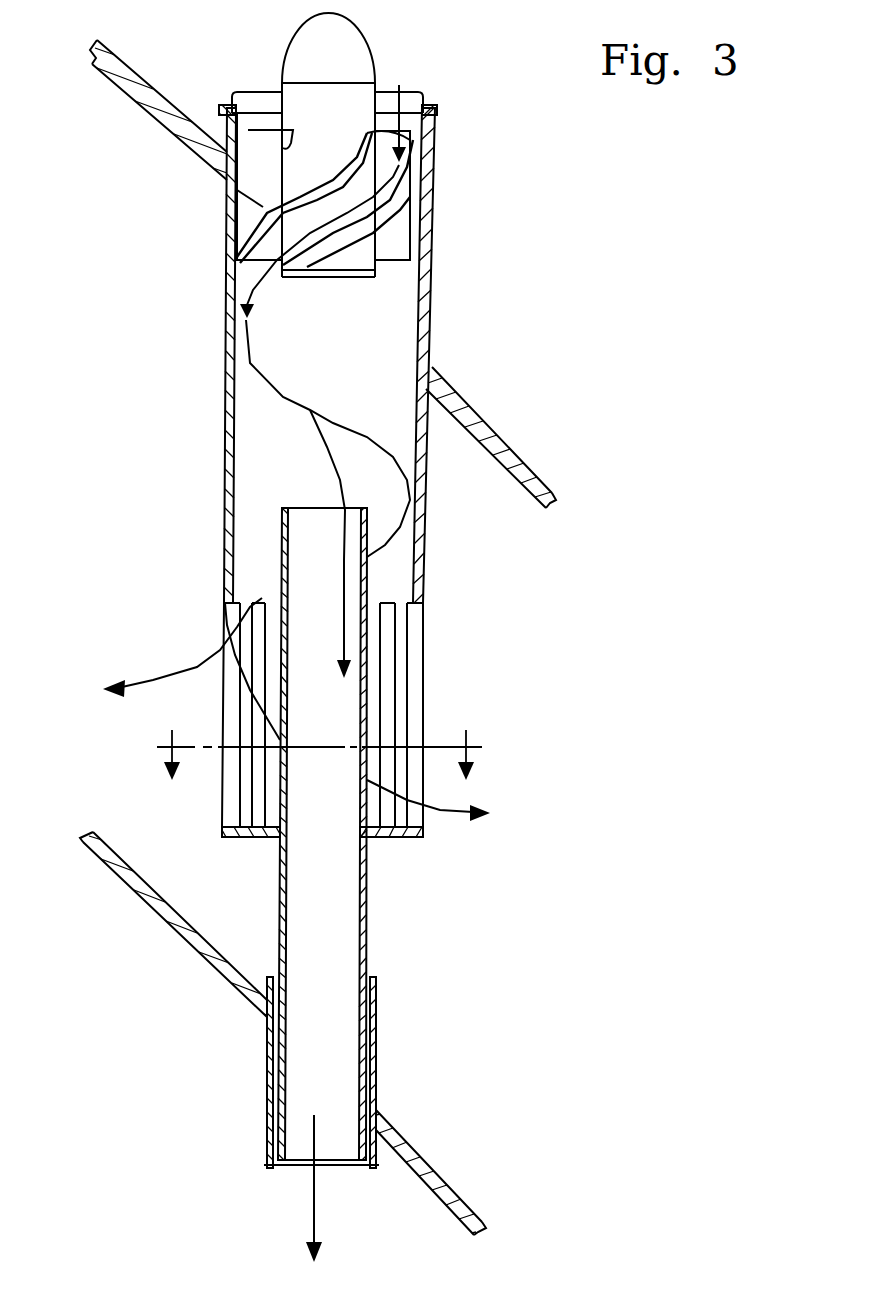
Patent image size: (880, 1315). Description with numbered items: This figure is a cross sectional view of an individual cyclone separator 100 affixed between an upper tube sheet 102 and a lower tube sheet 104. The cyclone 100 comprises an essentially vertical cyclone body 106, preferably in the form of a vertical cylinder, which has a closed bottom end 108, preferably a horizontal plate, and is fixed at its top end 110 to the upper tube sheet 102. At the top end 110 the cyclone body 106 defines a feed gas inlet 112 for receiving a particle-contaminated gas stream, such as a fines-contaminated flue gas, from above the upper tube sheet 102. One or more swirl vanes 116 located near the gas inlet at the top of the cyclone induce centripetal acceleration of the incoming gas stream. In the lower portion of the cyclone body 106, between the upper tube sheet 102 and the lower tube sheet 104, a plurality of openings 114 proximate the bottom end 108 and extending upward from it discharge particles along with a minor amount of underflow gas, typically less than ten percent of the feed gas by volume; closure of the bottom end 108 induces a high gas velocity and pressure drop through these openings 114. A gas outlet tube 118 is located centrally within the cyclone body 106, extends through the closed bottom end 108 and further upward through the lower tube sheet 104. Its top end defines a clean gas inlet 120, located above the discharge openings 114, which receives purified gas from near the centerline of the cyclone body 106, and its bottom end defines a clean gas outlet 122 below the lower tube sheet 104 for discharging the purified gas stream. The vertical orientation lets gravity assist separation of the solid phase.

The cyclone separator 100 is at (160, 391).
The upper tube sheet 102 is at (520, 454).
The lower tube sheet 104 is at (428, 1160).
The cyclone body 106 is at (227, 479).
The closed bottom end 108 is at (400, 838).
The top end 110 is at (435, 162).
The feed gas inlet 112 is at (415, 92).
The openings 114 is at (383, 624).
The swirl vanes 116 is at (237, 190).
The gas outlet tube 118 is at (367, 675).
The clean gas inlet 120 is at (305, 508).
The clean gas outlet 122 is at (296, 1165).